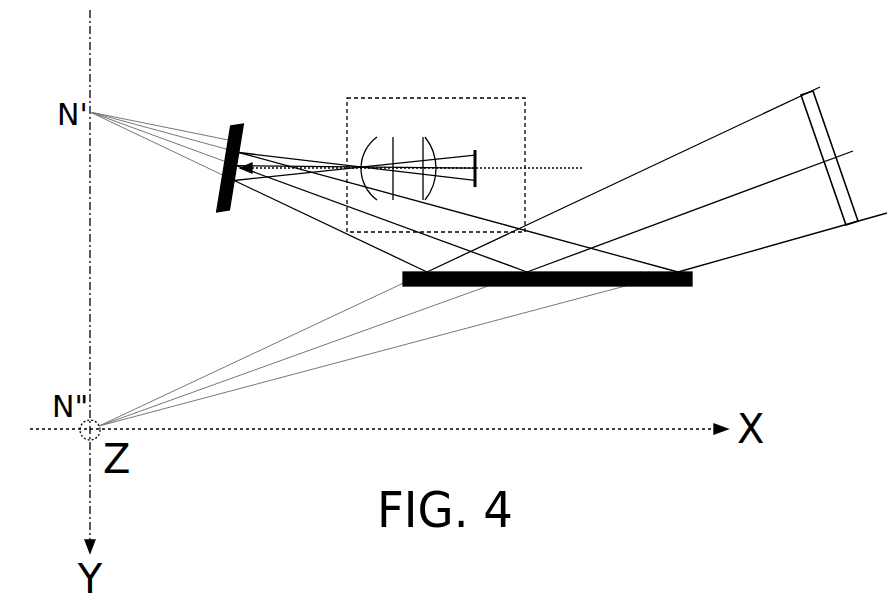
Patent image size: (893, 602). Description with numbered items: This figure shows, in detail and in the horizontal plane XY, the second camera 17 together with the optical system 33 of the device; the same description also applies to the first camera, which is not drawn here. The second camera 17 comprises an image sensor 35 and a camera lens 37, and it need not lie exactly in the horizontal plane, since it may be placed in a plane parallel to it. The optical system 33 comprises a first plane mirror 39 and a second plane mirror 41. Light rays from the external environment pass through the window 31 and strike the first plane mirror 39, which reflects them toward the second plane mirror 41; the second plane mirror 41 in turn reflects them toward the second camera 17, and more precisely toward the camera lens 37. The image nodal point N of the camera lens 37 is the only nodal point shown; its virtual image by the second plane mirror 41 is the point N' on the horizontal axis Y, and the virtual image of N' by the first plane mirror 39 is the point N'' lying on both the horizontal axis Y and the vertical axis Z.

The second camera 17 is at (446, 147).
The window 31 is at (832, 158).
The optical system 33 is at (295, 260).
The image sensor 35 is at (476, 149).
The camera lens 37 is at (398, 152).
The first plane mirror 39 is at (547, 298).
The second plane mirror 41 is at (220, 154).